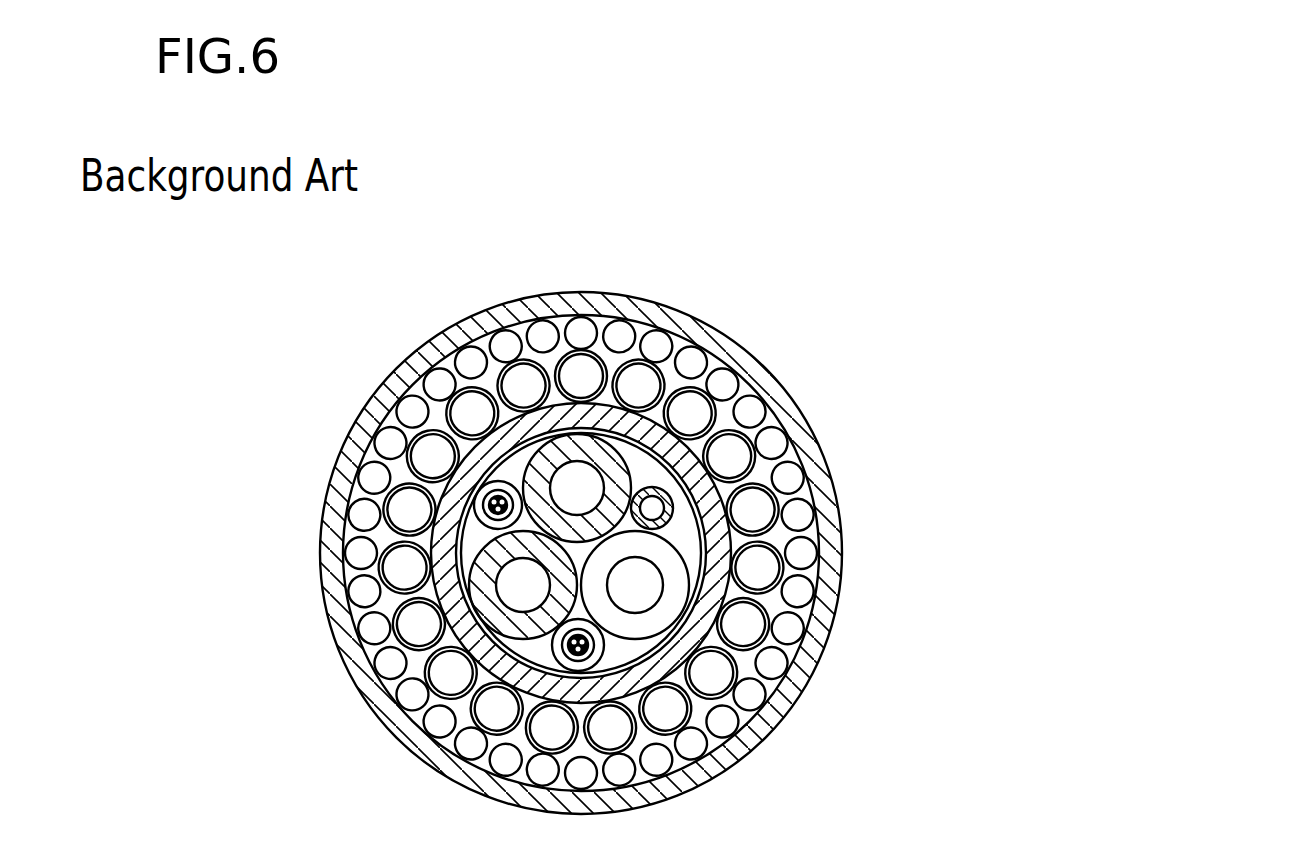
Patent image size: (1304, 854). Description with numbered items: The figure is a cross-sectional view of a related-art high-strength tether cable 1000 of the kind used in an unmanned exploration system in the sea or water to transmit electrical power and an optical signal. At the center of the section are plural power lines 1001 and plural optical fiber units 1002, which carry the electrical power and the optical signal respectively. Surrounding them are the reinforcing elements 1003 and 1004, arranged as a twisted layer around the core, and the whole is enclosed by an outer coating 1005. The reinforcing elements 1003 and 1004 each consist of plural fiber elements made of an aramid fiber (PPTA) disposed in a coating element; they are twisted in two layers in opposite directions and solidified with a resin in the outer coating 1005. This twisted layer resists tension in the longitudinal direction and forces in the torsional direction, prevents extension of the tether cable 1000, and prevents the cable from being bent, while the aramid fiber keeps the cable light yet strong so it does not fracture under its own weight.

The tether cable 1000 is at (812, 164).
The power line 1001 is at (573, 497).
The optical fiber unit 1002 is at (490, 511).
The reinforcing element 1003 is at (633, 374).
The reinforcing element 1004 is at (697, 355).
The outer coating 1005 is at (737, 770).